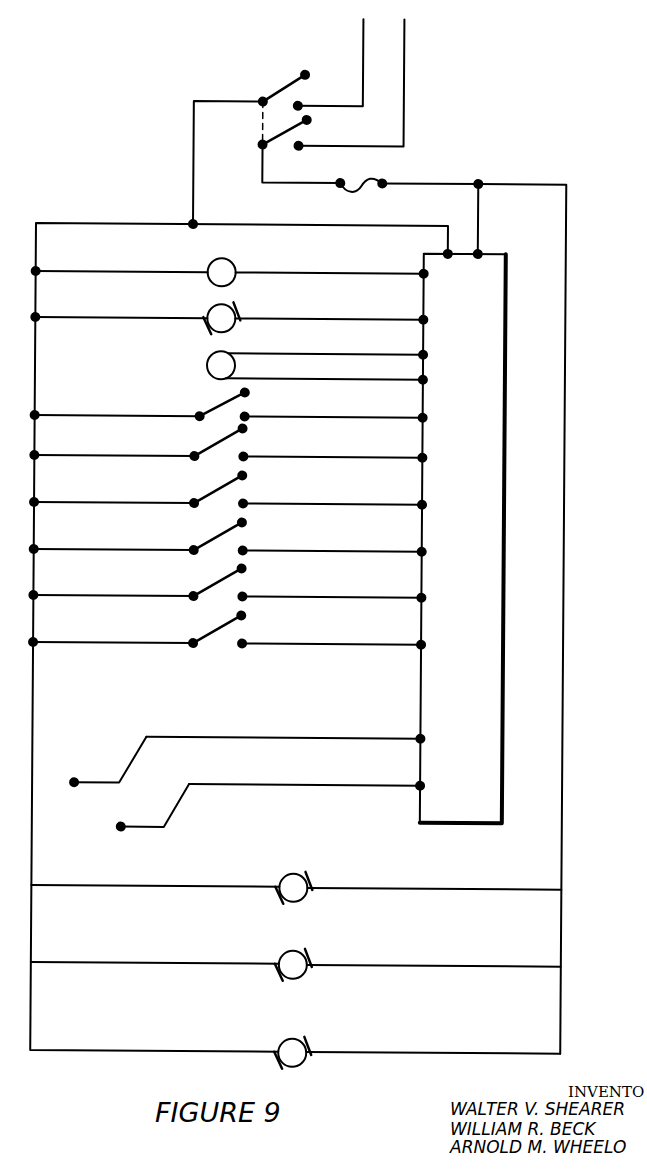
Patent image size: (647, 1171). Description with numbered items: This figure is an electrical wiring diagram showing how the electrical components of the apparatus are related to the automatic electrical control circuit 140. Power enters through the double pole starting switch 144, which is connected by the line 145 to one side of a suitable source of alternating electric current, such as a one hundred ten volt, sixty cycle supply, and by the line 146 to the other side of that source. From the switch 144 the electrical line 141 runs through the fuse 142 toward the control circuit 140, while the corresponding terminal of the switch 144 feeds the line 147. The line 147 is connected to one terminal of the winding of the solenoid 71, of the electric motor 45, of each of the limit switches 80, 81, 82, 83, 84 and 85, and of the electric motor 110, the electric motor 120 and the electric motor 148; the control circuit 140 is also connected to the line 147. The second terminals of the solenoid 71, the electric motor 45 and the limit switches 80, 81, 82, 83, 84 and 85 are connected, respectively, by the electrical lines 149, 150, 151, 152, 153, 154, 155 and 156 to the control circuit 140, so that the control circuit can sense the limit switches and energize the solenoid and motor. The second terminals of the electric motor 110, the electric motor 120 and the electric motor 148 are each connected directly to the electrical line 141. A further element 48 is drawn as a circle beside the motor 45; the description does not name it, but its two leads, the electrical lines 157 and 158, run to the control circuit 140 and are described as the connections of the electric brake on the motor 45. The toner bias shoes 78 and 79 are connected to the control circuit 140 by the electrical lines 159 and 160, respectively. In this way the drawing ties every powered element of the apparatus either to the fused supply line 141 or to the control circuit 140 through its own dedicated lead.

The electric motor 45 is at (208, 308).
The indicator lamp 48 is at (208, 364).
The solenoid 71 is at (209, 262).
The toner bias shoe 78 is at (133, 765).
The toner bias shoe 79 is at (178, 811).
The limit switch 80 is at (216, 407).
The limit switch 81 is at (214, 446).
The limit switch 82 is at (214, 490).
The limit switch 83 is at (214, 540).
The limit switch 84 is at (214, 586).
The limit switch 85 is at (214, 632).
The electric motor 110 is at (287, 874).
The electric motor 120 is at (287, 951).
The automatic electrical control circuit 140 is at (520, 439).
The electrical line 141 is at (506, 182).
The fuse 142 is at (370, 179).
The double pole starting switch 144 is at (285, 86).
The line 145 is at (404, 72).
The line 146 is at (362, 42).
The line 147 is at (148, 222).
The electric motor 148 is at (287, 1039).
The electrical line 149 is at (368, 270).
The electrical line 150 is at (370, 316).
The electrical line 151 is at (363, 415).
The electrical line 152 is at (368, 455).
The electrical line 153 is at (370, 502).
The electrical line 154 is at (368, 549).
The electrical line 155 is at (366, 595).
The electrical line 156 is at (368, 642).
The electrical line 157 is at (370, 351).
The electrical line 158 is at (368, 377).
The electrical line 159 is at (365, 736).
The electrical line 160 is at (365, 783).